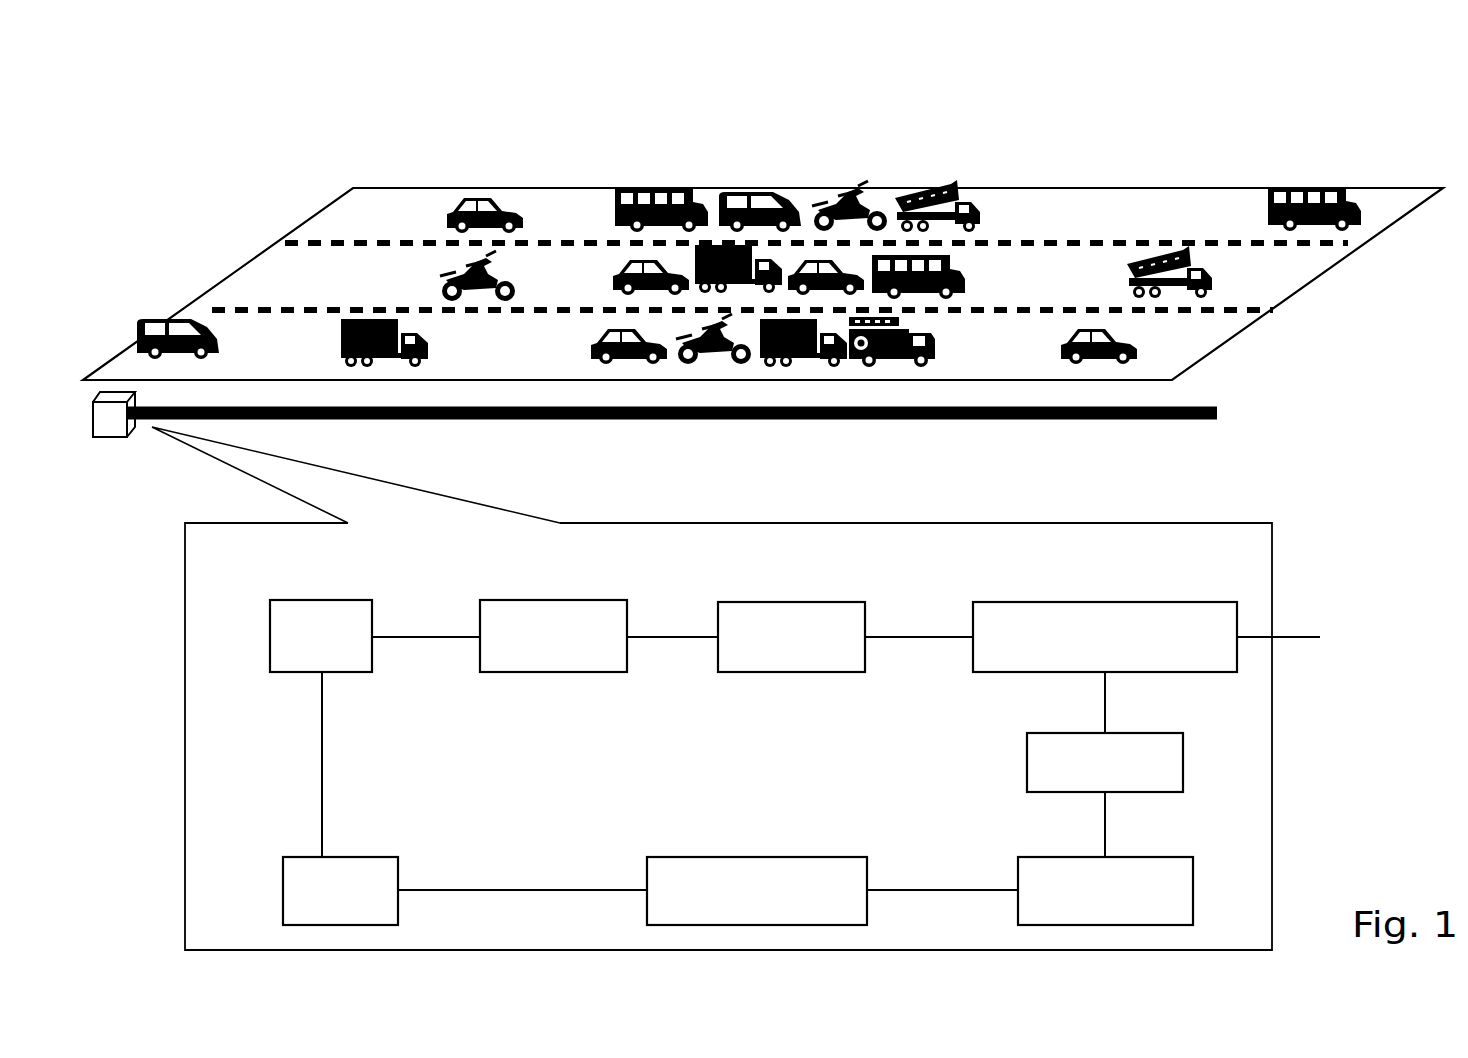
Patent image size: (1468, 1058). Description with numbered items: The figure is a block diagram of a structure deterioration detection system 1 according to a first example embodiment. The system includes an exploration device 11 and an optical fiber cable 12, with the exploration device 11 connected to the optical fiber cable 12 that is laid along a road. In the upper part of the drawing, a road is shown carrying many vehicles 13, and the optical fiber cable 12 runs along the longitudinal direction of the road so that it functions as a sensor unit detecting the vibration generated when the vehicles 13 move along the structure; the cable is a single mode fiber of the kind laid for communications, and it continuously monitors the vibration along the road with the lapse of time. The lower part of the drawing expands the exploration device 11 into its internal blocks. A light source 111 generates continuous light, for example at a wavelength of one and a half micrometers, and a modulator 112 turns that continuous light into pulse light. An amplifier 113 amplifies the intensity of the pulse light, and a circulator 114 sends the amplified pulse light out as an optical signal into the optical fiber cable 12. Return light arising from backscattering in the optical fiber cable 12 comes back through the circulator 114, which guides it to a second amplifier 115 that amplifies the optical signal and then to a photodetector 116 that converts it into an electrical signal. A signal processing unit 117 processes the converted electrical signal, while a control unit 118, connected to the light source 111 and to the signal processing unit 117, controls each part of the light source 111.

The structure deterioration detection system 1 is at (861, 76).
The exploration device 11 is at (108, 440).
The optical fiber cable 12 is at (1137, 420).
The vehicle 13 is at (752, 188).
The light source 111 is at (328, 600).
The modulator 112 is at (576, 600).
The amplifier 113 is at (823, 602).
The circulator 114 is at (1149, 602).
The amplifier 115 is at (1157, 733).
The photodetector 116 is at (1150, 857).
The signal processing unit 117 is at (806, 857).
The control unit 118 is at (366, 857).